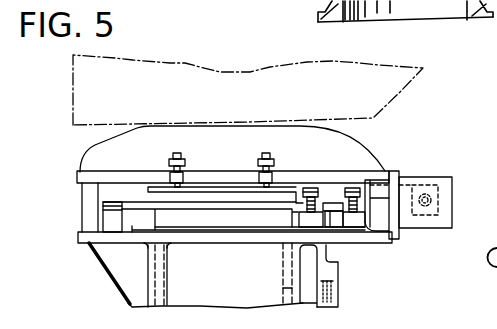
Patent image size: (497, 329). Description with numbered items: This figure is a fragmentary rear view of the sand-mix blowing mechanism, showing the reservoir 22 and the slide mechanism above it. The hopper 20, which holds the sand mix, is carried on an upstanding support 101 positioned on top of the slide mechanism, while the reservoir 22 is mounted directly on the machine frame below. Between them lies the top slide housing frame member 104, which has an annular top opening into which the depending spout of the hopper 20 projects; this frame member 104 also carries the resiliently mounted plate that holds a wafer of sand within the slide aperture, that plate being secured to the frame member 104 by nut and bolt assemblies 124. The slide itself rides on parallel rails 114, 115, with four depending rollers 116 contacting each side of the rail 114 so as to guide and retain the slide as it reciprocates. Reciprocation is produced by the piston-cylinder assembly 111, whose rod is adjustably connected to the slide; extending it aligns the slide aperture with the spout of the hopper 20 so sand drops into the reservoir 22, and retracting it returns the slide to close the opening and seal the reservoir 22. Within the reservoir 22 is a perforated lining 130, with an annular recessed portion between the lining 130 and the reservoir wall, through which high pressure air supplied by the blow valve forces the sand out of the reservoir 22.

The hopper 20 is at (386, 92).
The reservoir 22 is at (150, 278).
The upstanding support 101 is at (347, 148).
The top slide housing frame member 104 is at (366, 178).
The piston-cylinder assembly 111 is at (443, 206).
The rail 114 is at (338, 213).
The rail 115 is at (110, 223).
The depending rollers 116 is at (312, 220).
The nut and bolt assembly 124 is at (258, 160).
The perforated lining 130 is at (163, 280).